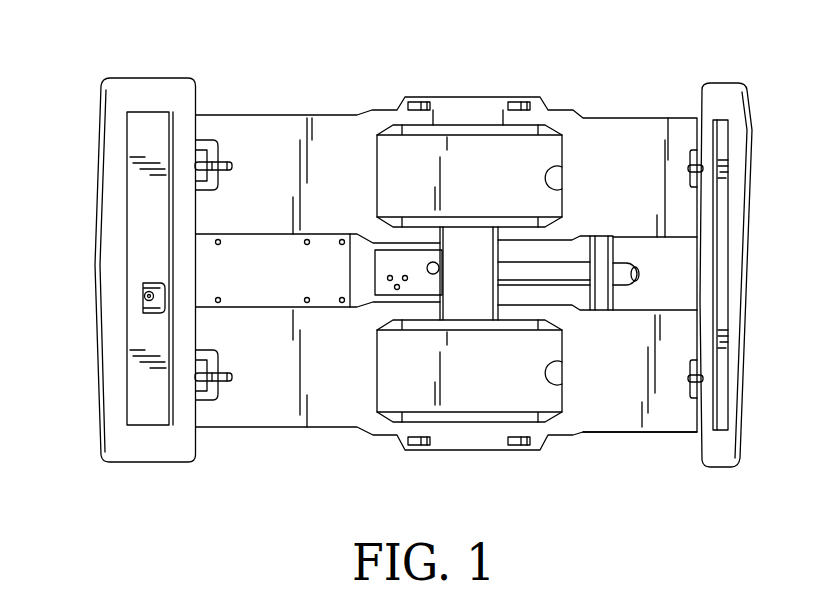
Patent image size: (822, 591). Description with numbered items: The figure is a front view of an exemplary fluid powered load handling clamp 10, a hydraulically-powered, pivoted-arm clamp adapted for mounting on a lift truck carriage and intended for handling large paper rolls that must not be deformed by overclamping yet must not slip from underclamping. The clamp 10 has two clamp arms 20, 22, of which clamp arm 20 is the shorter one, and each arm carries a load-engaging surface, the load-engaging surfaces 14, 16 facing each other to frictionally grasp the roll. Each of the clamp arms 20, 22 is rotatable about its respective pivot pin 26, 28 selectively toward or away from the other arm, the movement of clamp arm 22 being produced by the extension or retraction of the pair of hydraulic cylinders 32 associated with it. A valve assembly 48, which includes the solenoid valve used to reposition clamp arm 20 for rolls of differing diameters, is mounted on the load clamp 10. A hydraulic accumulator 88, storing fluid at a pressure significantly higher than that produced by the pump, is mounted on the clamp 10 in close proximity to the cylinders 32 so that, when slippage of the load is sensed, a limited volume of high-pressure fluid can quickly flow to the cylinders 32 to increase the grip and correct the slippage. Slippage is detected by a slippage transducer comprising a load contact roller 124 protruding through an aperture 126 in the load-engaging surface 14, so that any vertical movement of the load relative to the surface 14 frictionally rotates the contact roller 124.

The load handling clamp 10 is at (612, 68).
The load-engaging surface 14 is at (142, 77).
The load-engaging surface 16 is at (722, 82).
The clamp arm 20 is at (300, 115).
The clamp arm 22 is at (637, 433).
The pivot pin 26 is at (417, 102).
The pivot pin 28 is at (513, 102).
The hydraulic cylinders 32 is at (545, 178).
The valve assembly 48 is at (388, 267).
The hydraulic accumulator 88 is at (557, 268).
The load contact roller 124 is at (150, 290).
The aperture 126 is at (150, 312).